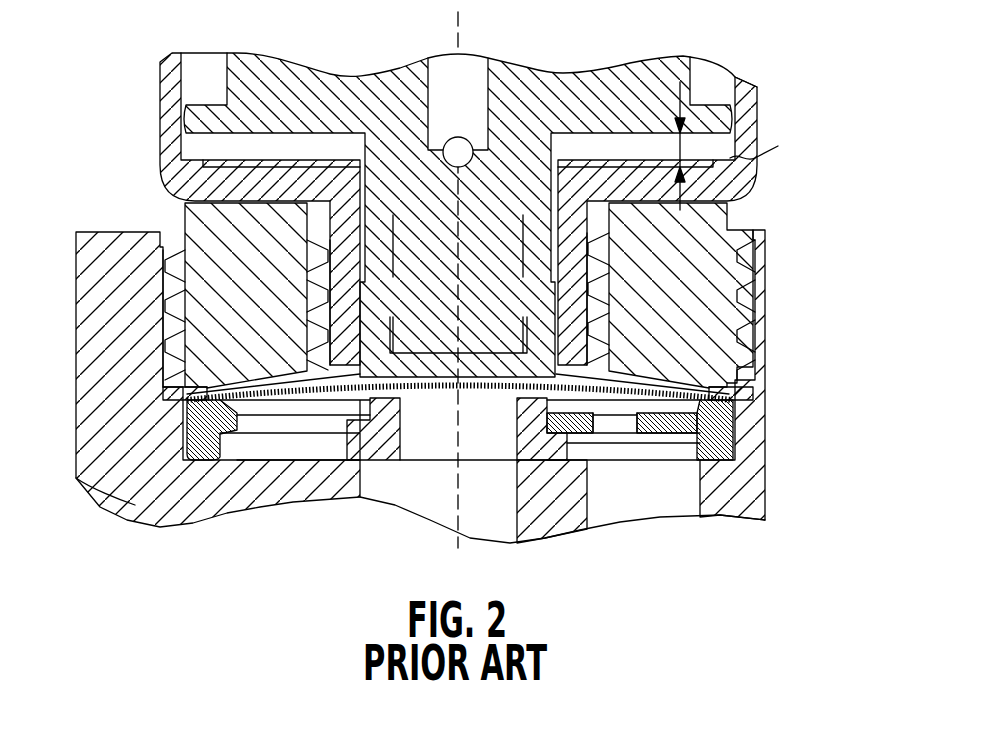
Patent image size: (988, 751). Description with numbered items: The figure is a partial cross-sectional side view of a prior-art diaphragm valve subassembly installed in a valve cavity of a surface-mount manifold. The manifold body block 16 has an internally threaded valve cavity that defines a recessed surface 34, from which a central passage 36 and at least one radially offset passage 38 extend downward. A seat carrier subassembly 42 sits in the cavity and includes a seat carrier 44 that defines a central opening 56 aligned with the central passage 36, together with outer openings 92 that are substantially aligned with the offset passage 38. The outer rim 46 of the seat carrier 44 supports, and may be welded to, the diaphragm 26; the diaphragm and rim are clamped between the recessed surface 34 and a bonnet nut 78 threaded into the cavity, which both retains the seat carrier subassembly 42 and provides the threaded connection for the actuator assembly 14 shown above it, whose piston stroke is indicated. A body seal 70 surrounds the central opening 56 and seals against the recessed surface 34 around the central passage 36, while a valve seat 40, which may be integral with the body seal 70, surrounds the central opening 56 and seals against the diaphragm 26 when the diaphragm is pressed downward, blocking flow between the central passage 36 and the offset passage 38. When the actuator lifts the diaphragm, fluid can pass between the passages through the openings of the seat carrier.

The actuator assembly 14 is at (138, 90).
The manifold body block 16 is at (76, 327).
The diaphragm 26 is at (660, 392).
The recessed surface 34 is at (300, 456).
The central passage 36 is at (515, 506).
The radially offset passage 38 is at (700, 493).
The valve seat 40 is at (378, 447).
The seat carrier subassembly 42 is at (150, 437).
The seat carrier 44 is at (185, 457).
The outer rim 46 is at (735, 382).
The central opening 56 is at (393, 425).
The body seal 70 is at (546, 462).
The bonnet nut 78 is at (697, 263).
The outer openings 92 is at (240, 428).